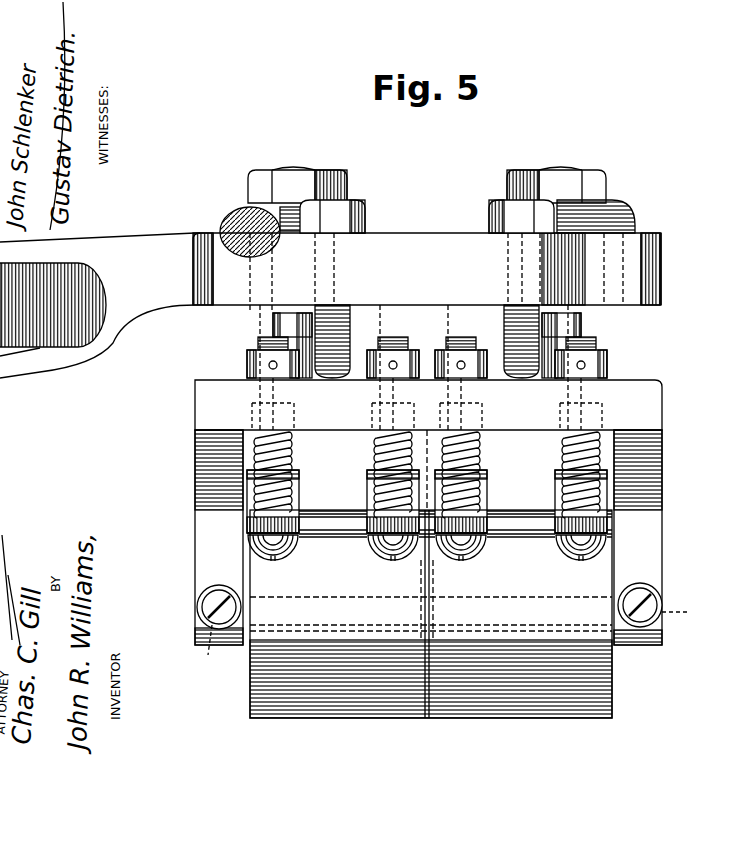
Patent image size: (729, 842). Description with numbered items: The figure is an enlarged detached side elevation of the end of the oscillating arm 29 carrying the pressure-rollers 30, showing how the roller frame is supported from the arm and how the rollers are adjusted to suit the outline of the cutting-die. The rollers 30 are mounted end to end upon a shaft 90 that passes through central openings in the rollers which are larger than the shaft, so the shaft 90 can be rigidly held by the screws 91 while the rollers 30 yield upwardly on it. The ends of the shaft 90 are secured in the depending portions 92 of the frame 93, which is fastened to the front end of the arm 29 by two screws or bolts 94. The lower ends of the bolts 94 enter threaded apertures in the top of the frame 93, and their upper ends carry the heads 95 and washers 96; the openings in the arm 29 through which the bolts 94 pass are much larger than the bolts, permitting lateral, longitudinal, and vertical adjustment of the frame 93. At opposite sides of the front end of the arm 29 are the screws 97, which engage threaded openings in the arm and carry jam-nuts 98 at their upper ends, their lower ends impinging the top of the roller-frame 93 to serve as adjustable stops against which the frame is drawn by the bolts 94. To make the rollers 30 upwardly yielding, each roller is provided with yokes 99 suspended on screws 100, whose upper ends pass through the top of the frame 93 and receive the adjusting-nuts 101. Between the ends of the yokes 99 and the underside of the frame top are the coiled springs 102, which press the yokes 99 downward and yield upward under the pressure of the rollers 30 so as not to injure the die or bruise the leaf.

The oscillating arm 29 is at (330, 305).
The rollers 30 is at (530, 716).
The shaft 90 is at (656, 604).
The screws 91 is at (452, 637).
The depending portions 92 is at (428, 537).
The frame 93 is at (195, 437).
The screws or bolts 94 is at (606, 322).
The heads 95 is at (612, 180).
The washers 96 is at (636, 214).
The screws 97 is at (506, 325).
The nuts 98 is at (488, 217).
The yokes 99 is at (566, 468).
The screws 100 is at (258, 343).
The adjusting-nuts 101 is at (455, 350).
The coiled springs 102 is at (572, 436).